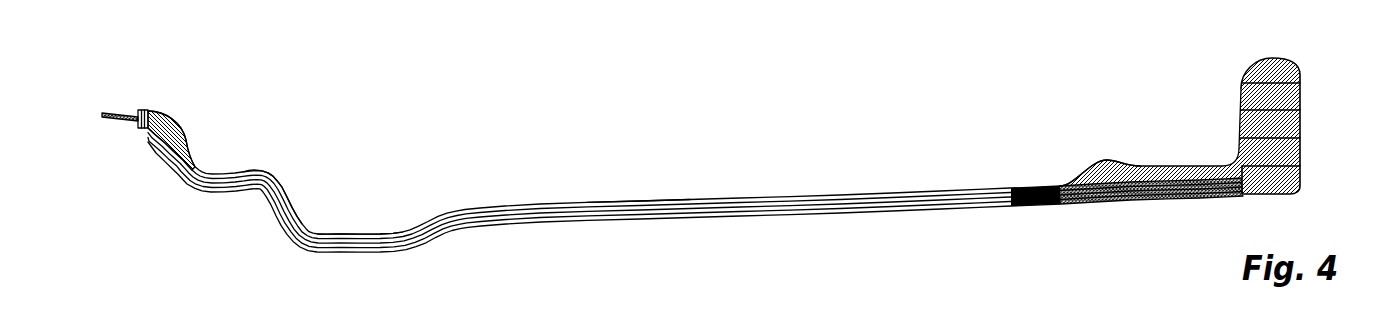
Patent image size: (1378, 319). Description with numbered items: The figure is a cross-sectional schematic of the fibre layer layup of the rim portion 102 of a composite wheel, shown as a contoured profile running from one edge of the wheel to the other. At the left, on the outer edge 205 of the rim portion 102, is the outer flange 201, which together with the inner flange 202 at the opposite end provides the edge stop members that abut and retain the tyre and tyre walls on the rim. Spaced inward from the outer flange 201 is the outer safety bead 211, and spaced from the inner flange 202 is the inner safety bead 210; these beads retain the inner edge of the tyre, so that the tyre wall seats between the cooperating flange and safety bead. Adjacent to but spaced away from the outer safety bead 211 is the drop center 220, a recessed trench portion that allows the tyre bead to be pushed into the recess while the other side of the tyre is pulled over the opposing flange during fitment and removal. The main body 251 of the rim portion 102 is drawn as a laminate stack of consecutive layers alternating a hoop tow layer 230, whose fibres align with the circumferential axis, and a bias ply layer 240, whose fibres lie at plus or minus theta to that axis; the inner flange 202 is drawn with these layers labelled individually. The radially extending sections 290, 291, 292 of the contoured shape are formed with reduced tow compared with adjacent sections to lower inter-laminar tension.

The rim portion 102 is at (712, 137).
The outer flange 201 is at (147, 111).
The inner flange 202 is at (1303, 101).
The outer edge 205 is at (118, 155).
The inner safety bead 210 is at (1093, 160).
The outer safety bead 211 is at (262, 169).
The drop center 220 is at (372, 220).
The hoop tow layer 230 is at (1302, 95).
The bias ply layer 240 is at (1302, 68).
The main body 251 is at (643, 198).
The radially extending section 290 is at (190, 130).
The radially extending section 291 is at (302, 195).
The radially extending section 292 is at (1175, 126).